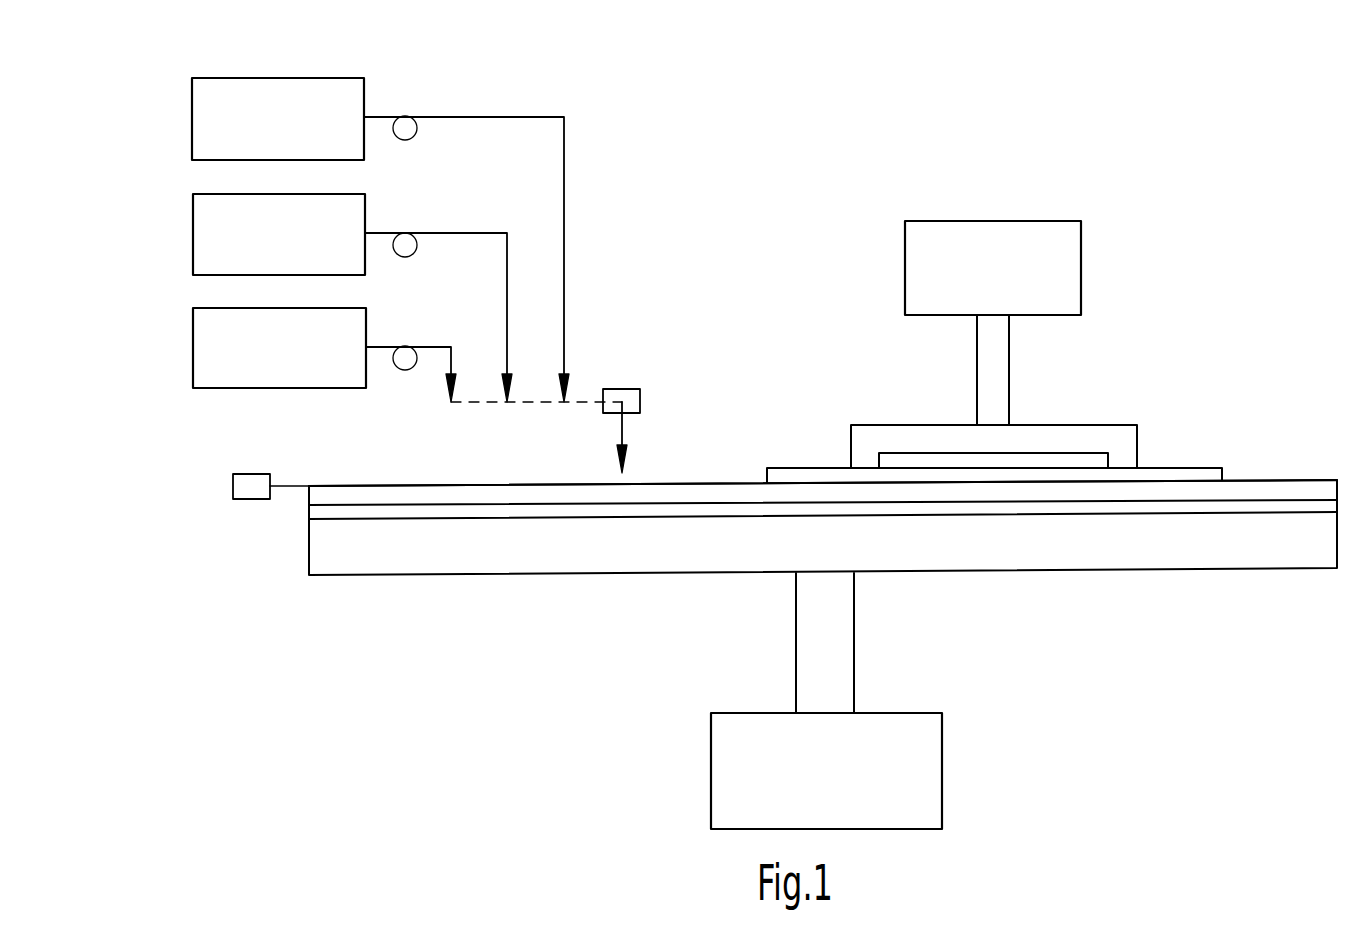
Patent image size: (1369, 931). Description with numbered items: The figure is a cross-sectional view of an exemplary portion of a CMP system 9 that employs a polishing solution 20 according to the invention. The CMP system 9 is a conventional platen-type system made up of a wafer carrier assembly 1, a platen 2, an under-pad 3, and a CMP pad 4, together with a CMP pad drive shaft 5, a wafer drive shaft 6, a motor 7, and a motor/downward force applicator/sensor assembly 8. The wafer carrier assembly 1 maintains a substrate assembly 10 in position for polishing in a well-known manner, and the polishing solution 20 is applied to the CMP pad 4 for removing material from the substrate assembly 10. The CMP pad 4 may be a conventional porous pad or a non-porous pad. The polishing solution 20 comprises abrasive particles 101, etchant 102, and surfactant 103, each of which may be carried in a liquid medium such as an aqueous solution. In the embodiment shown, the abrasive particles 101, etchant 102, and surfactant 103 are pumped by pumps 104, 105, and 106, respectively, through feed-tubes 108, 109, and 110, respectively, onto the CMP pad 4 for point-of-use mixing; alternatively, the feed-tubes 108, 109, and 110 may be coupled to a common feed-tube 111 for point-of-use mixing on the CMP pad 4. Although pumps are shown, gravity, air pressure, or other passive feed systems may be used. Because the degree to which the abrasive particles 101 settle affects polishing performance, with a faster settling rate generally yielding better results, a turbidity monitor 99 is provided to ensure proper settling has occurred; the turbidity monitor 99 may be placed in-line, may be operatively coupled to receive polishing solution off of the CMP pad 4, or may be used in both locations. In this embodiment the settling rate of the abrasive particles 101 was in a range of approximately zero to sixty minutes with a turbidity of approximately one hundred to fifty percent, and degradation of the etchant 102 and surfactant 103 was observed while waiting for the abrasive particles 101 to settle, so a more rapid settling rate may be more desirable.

The wafer carrier assembly 1 is at (1114, 428).
The platen 2 is at (455, 575).
The under-pad 3 is at (312, 513).
The CMP pad 4 is at (452, 484).
The CMP pad drive shaft 5 is at (855, 655).
The wafer drive shaft 6 is at (1010, 369).
The motor 7 is at (943, 772).
The motor/downward force applicator/sensor assembly 8 is at (990, 222).
The CMP system 9 is at (1160, 45).
The substrate assembly 10 is at (895, 462).
The polishing solution 20 is at (1204, 472).
The turbidity monitor 99 is at (642, 400).
The abrasive particles 101 is at (357, 152).
The etchant 102 is at (358, 267).
The surfactant 103 is at (359, 379).
The pump 104 is at (405, 140).
The pump 105 is at (405, 257).
The pump 106 is at (405, 370).
The feed-tube 108 is at (567, 246).
The feed-tube 109 is at (510, 303).
The feed-tube 110 is at (454, 357).
The feed-tube 111 is at (629, 428).